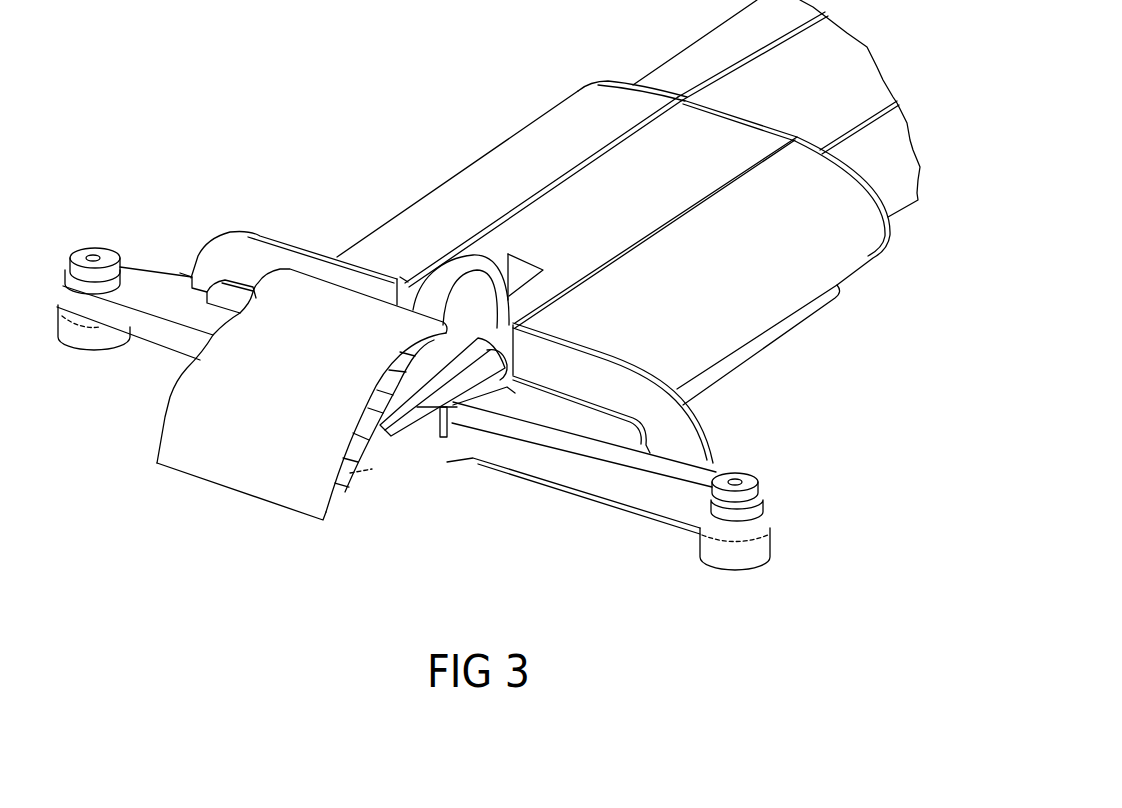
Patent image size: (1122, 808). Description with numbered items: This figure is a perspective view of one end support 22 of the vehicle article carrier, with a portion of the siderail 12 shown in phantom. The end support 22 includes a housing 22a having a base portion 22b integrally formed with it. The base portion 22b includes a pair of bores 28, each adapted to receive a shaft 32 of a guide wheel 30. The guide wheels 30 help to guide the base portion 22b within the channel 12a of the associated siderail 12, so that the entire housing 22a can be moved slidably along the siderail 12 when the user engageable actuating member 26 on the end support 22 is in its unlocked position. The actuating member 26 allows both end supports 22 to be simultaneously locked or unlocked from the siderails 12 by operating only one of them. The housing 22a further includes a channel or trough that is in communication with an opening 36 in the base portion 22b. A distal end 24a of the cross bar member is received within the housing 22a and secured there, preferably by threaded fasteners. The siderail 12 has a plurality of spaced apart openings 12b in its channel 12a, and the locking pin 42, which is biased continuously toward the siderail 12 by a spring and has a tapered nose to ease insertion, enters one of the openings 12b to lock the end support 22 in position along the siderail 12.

The siderail 12 is at (278, 495).
The channel 12a is at (380, 440).
The openings 12b is at (350, 478).
The end support 22 is at (360, 153).
The housing 22a is at (770, 307).
The base portion 22b is at (141, 270).
The distal end of cross bar member 24a is at (698, 57).
The actuating member 26 is at (617, 167).
The bores 28 is at (100, 256).
The guide wheel 30 is at (103, 343).
The shaft 32 is at (92, 257).
The opening 36 is at (473, 392).
The locking pin 42 is at (403, 397).